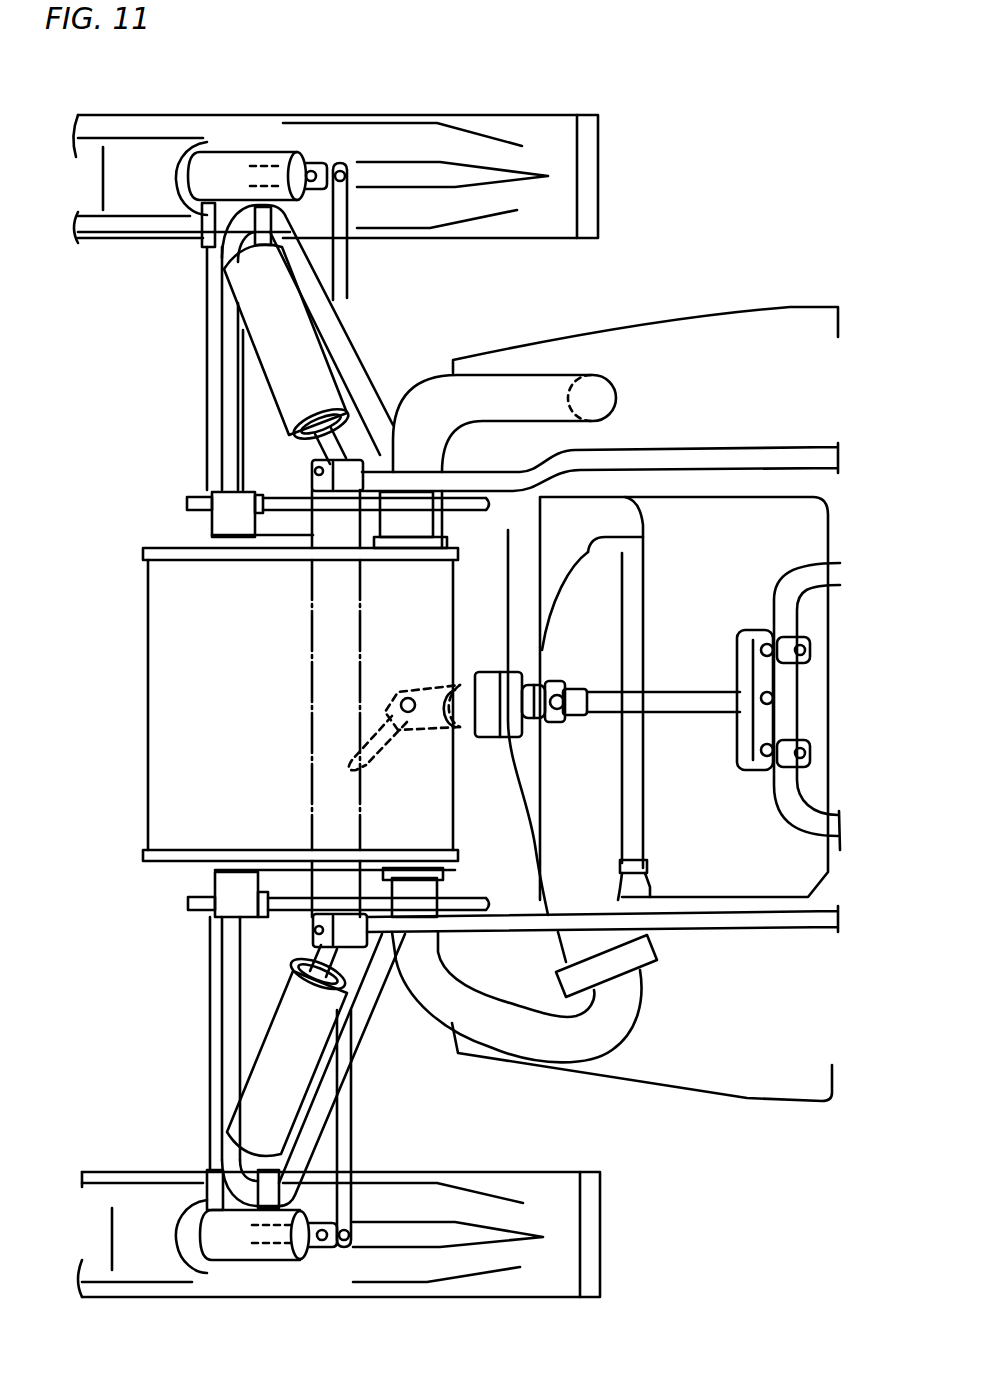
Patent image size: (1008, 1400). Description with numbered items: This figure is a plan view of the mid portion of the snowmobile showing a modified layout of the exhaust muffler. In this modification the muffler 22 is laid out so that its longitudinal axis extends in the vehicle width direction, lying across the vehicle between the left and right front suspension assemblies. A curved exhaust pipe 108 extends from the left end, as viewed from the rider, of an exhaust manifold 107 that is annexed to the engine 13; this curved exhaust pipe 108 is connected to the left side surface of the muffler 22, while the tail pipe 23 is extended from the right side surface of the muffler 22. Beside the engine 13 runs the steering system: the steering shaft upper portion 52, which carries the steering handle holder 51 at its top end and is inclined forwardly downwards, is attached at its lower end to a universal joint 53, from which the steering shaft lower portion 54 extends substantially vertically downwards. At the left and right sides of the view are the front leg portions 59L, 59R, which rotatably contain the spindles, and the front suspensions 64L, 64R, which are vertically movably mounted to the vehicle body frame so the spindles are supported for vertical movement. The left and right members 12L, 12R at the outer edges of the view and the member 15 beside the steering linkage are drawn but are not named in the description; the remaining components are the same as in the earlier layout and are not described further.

The right swing arm 12R is at (537, 137).
The left swing arm 12L is at (537, 1283).
The front leg portion 59R is at (237, 167).
The front leg portion 59L is at (260, 1253).
The front suspension 64R is at (275, 352).
The front suspension 64L is at (278, 1067).
The muffler 22 is at (175, 727).
The tail pipe 23 is at (485, 395).
The engine 13 is at (757, 880).
The frame tube 15 is at (803, 810).
The steering handle holder 51 is at (752, 617).
The steering shaft upper portion 52 is at (687, 692).
The universal joint 53 is at (568, 683).
The steering shaft lower portion 54 is at (503, 670).
The exhaust manifold 107 is at (583, 810).
The curved exhaust pipe 108 is at (517, 1020).